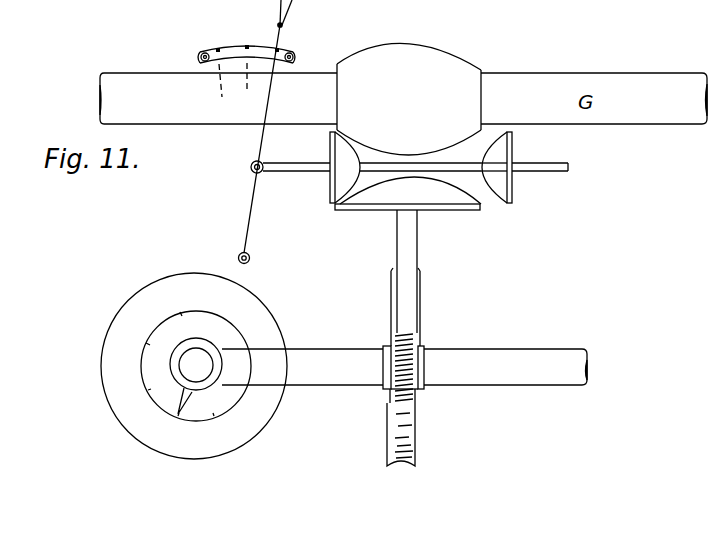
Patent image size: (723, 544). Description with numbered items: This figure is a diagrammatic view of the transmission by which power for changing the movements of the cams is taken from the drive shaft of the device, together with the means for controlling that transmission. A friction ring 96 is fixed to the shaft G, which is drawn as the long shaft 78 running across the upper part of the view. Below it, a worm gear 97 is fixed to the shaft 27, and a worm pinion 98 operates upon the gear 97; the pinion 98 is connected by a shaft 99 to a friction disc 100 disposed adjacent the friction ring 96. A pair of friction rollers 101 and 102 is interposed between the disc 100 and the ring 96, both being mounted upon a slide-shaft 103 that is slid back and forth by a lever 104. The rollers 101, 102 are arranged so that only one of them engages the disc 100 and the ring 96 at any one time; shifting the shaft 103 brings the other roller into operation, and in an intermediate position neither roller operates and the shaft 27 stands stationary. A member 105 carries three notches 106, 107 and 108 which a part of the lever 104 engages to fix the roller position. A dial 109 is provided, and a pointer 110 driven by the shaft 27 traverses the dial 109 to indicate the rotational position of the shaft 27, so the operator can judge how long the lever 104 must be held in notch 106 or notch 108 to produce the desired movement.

The shaft 78 is at (392, 62).
The friction ring 96 is at (452, 59).
The member 105 is at (200, 57).
The notch 106 is at (220, 46).
The notch 107 is at (249, 44).
The notch 108 is at (281, 48).
The lever 104 is at (286, 18).
The friction roller 101 is at (340, 178).
The friction roller 102 is at (500, 181).
The slide-shaft 103 is at (465, 171).
The friction disc 100 is at (389, 194).
The shaft 99 is at (407, 247).
The worm gear 97 is at (418, 325).
The worm pinion 98 is at (392, 395).
The shaft 27 is at (540, 376).
The dial 109 is at (112, 364).
The pointer 110 is at (180, 397).